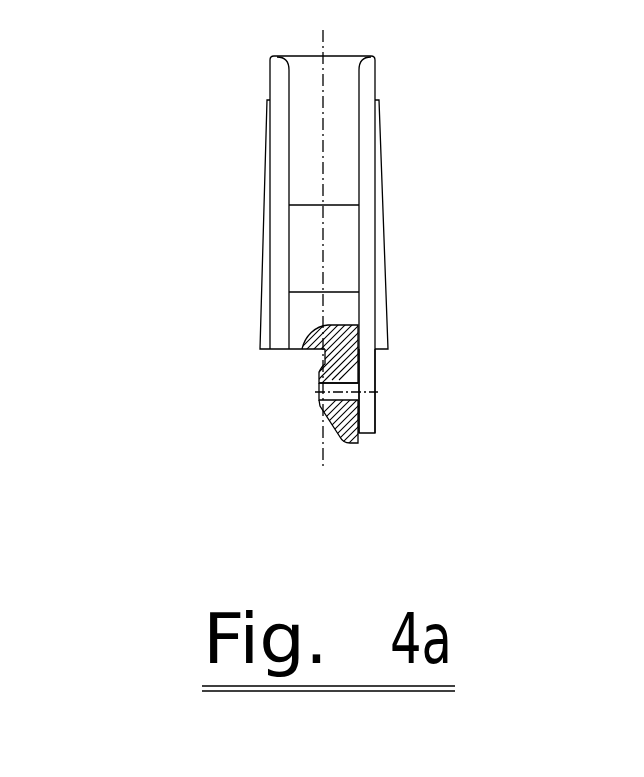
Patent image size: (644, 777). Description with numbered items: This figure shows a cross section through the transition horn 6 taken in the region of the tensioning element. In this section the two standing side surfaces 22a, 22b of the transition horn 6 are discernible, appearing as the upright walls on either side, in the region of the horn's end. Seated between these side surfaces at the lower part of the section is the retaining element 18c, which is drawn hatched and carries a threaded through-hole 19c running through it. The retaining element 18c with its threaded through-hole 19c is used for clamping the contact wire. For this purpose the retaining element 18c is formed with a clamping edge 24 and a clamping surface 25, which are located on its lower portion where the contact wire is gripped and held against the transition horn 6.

The transition horn 6 is at (312, 173).
The standing side surface 22a is at (385, 218).
The standing side surface 22b is at (262, 268).
The threaded through-hole 19c is at (320, 383).
The retaining element 18c is at (372, 408).
The clamping surface 25 is at (327, 430).
The clamping edge 24 is at (335, 415).